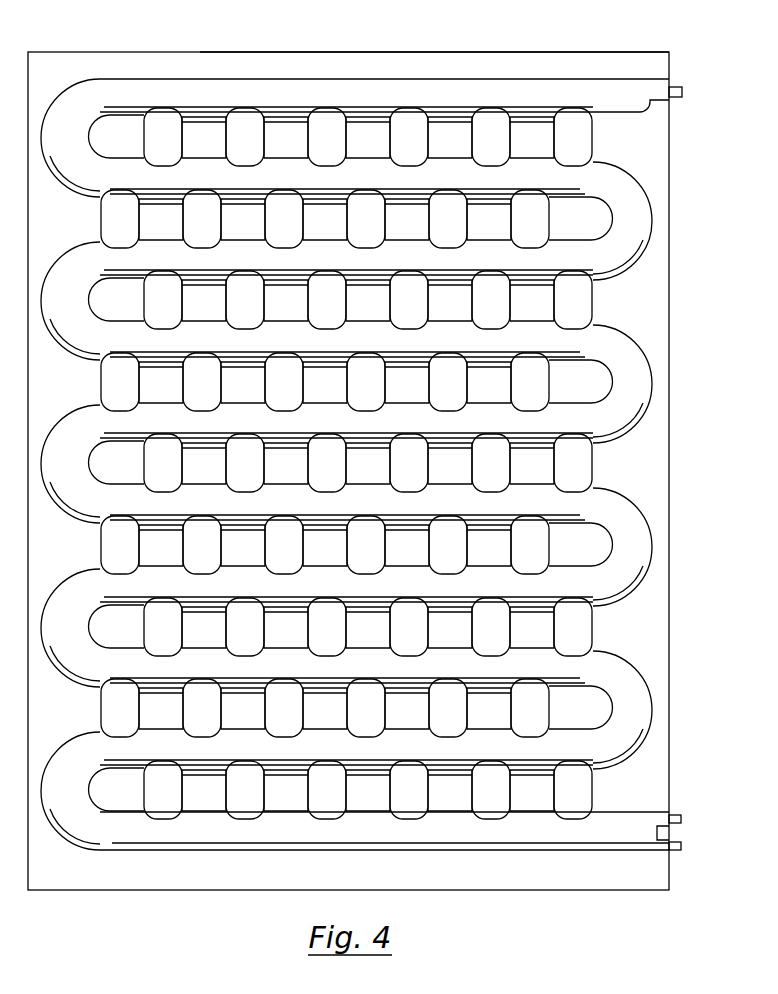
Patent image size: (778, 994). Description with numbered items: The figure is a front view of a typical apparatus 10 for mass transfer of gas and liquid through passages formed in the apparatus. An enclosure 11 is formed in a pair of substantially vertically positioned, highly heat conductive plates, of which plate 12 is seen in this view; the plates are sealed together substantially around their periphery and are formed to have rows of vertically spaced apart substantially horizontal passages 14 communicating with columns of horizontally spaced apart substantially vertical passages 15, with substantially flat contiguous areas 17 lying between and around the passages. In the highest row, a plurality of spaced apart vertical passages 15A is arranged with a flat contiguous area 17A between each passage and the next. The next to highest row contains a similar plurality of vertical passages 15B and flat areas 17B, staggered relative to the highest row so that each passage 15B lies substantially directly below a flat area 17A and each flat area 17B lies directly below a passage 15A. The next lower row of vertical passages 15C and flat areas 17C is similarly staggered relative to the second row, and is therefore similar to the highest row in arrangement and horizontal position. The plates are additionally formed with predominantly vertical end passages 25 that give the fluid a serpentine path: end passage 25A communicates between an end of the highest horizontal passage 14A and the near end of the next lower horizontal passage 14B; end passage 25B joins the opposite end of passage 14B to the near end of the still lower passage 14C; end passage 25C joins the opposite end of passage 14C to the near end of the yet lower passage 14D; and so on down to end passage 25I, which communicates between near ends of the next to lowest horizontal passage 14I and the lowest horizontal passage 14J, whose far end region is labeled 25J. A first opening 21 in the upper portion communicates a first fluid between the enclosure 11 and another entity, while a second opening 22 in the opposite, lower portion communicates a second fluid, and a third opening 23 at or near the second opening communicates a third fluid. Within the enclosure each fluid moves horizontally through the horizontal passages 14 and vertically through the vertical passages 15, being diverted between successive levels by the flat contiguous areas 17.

The apparatus 10 is at (114, 37).
The enclosure 11 is at (185, 58).
The highly heat conductive plate 12 is at (277, 58).
The substantially horizontal passage 14 is at (399, 431).
The highest substantially horizontal passage 14A is at (272, 105).
The next lower substantially horizontal passage 14B is at (272, 188).
The next still lower substantially horizontal passage 14C is at (315, 268).
The next yet lower substantially horizontal passage 14D is at (355, 350).
The next to lowest substantially horizontal passage 14I is at (395, 755).
The lowest substantially horizontal passage 14J is at (435, 838).
The substantially vertical passage 15 is at (582, 801).
The vertical passage of highest row 15A is at (586, 148).
The vertical passage of next to highest row 15B is at (543, 230).
The vertical passage of next lower row 15C is at (586, 311).
The substantially flat contiguous area 17 is at (541, 801).
The flat contiguous area of highest row 17A is at (545, 148).
The flat contiguous area of next to highest row 17B is at (502, 230).
The flat contiguous area of next lower row 17C is at (545, 311).
The first opening 21 is at (682, 92).
The second opening 22 is at (682, 846).
The third opening 23 is at (682, 818).
The predominantly vertical end passage 25 is at (623, 393).
The predominantly vertical end passage 25A is at (55, 148).
The predominantly vertical end passage 25B is at (619, 230).
The predominantly vertical end passage 25C is at (55, 311).
The predominantly vertical end passage 25I is at (620, 719).
The U-turn passage of tenth segment 25J is at (55, 801).